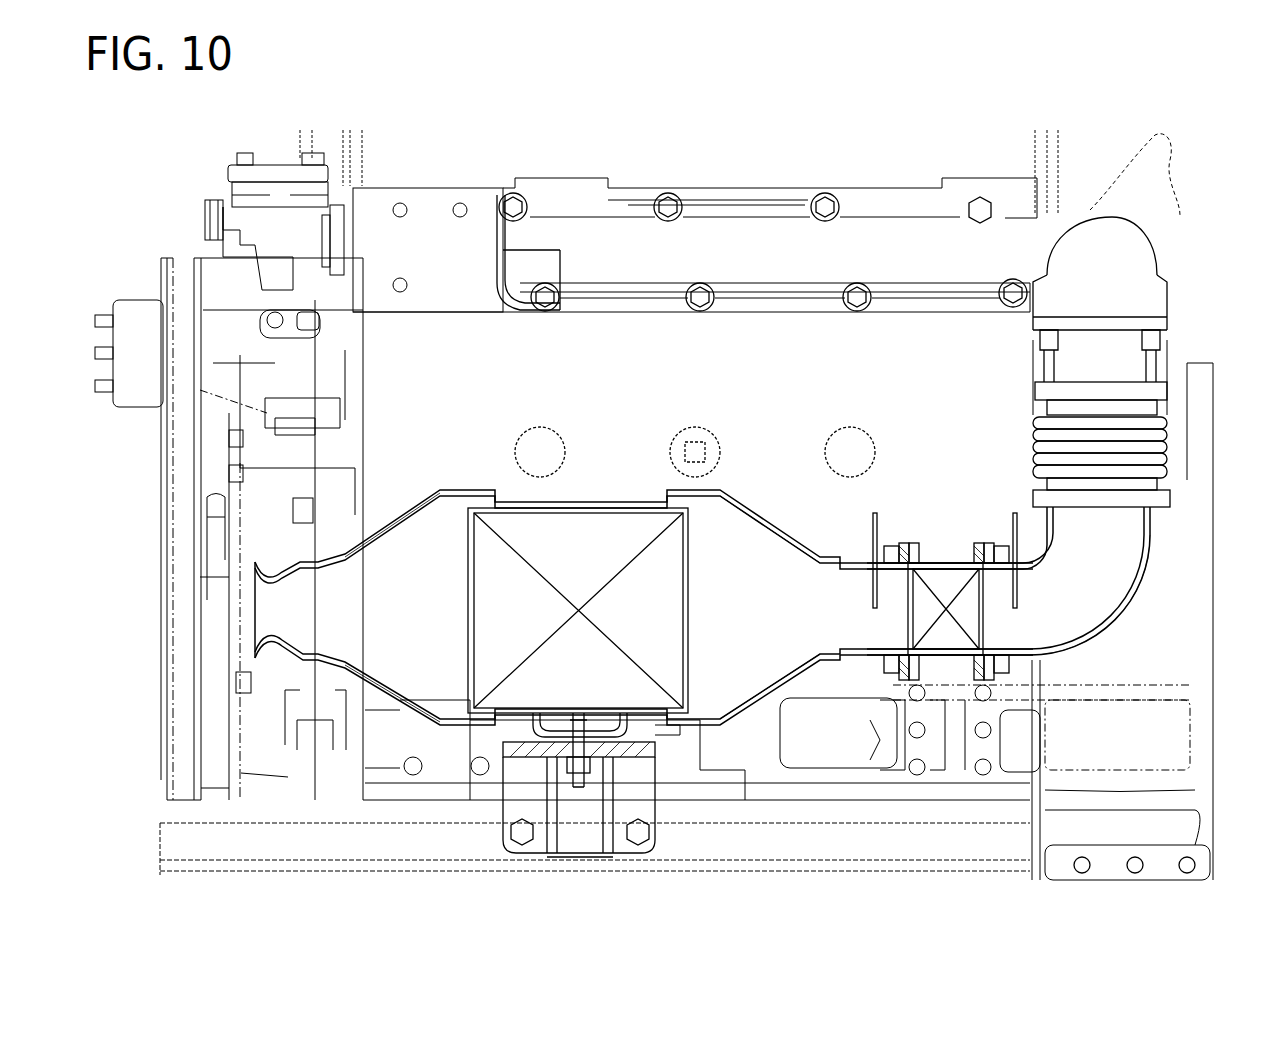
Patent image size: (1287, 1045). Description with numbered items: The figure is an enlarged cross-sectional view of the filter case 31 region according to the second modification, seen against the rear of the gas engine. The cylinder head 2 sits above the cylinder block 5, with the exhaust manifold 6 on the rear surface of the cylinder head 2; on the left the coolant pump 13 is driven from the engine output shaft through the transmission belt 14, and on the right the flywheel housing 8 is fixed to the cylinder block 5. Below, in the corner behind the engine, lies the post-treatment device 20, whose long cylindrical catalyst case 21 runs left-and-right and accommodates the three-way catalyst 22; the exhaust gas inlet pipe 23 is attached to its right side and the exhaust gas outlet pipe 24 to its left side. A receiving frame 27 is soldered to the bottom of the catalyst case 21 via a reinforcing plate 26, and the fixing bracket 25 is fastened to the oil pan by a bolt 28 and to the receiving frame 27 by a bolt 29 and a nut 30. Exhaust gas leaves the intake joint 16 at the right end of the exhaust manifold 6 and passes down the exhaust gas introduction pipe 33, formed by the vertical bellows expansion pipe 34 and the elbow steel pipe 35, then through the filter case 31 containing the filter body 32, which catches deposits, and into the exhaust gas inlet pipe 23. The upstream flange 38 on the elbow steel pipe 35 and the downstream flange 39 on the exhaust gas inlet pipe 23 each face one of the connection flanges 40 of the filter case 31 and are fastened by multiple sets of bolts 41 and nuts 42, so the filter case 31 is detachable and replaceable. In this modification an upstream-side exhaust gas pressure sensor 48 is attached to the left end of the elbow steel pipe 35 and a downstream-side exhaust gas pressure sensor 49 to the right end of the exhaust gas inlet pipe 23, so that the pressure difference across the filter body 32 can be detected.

The cylinder head 2 is at (345, 258).
The cylinder block 5 is at (835, 355).
The exhaust manifold 6 is at (593, 248).
The flywheel housing 8 is at (1147, 728).
The coolant pump 13 is at (285, 212).
The transmission belt 14 is at (187, 472).
The intake joint 16 is at (1133, 262).
The post-treatment device 20 is at (702, 549).
The catalyst case 21 is at (626, 506).
The three-way catalyst 22 is at (587, 535).
The exhaust gas inlet pipe 23 is at (760, 537).
The exhaust gas outlet pipe 24 is at (405, 540).
The fixing bracket 25 is at (578, 828).
The reinforcing plate 26 is at (645, 726).
The receiving frame 27 is at (505, 770).
The bolt 28 is at (523, 842).
The bolt 29 is at (570, 724).
The nut 30 is at (593, 768).
The filter case 31 is at (950, 622).
The filter body 32 is at (950, 590).
The exhaust gas introduction pipe 33 is at (1175, 520).
The bellows expansion pipe 34 is at (1155, 387).
The elbow steel pipe 35 is at (1093, 612).
The upstream flange 38 is at (988, 548).
The downstream flange 39 is at (903, 540).
The connection flange 40 is at (913, 545).
The bolt 41 is at (897, 690).
The nut 42 is at (893, 688).
The upstream-side exhaust gas pressure sensor 48 is at (1025, 478).
The downstream-side exhaust gas pressure sensor 49 is at (868, 527).